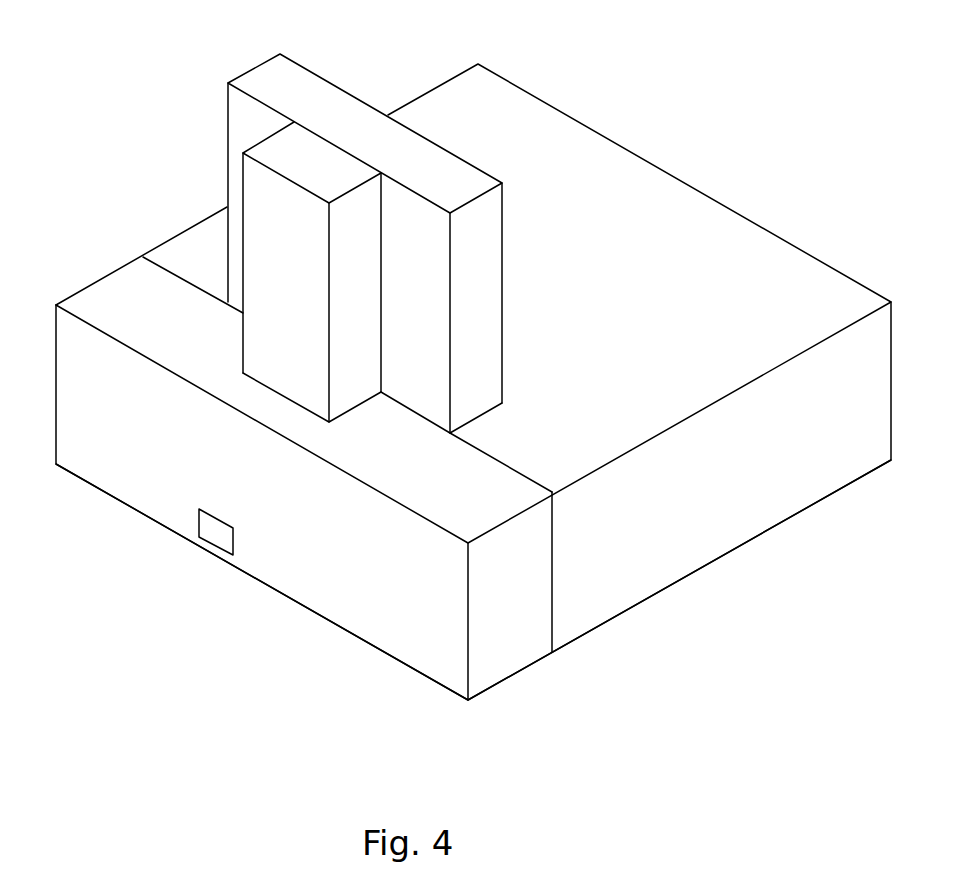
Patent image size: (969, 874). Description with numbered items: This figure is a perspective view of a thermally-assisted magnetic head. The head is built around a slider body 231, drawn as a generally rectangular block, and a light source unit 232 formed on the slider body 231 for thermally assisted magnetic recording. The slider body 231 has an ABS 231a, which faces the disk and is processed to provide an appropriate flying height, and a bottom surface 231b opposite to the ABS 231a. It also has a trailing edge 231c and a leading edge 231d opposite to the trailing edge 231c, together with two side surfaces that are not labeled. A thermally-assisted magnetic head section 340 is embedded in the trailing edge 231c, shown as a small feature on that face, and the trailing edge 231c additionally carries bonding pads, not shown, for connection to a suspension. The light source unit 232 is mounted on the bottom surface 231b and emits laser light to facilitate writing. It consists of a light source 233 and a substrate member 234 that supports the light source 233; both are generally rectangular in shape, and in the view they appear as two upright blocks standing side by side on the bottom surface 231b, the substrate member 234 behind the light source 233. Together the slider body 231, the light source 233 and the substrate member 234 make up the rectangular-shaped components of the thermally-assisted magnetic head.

The slider body 231 is at (473, 428).
The ABS 231a is at (630, 608).
The bottom surface 231b is at (660, 382).
The trailing edge 231c is at (423, 597).
The leading edge 231d is at (567, 113).
The light source unit 232 is at (278, 220).
The light source 233 is at (264, 150).
The substrate member 234 is at (264, 71).
The thermally-assisted magnetic head section 340 is at (211, 534).